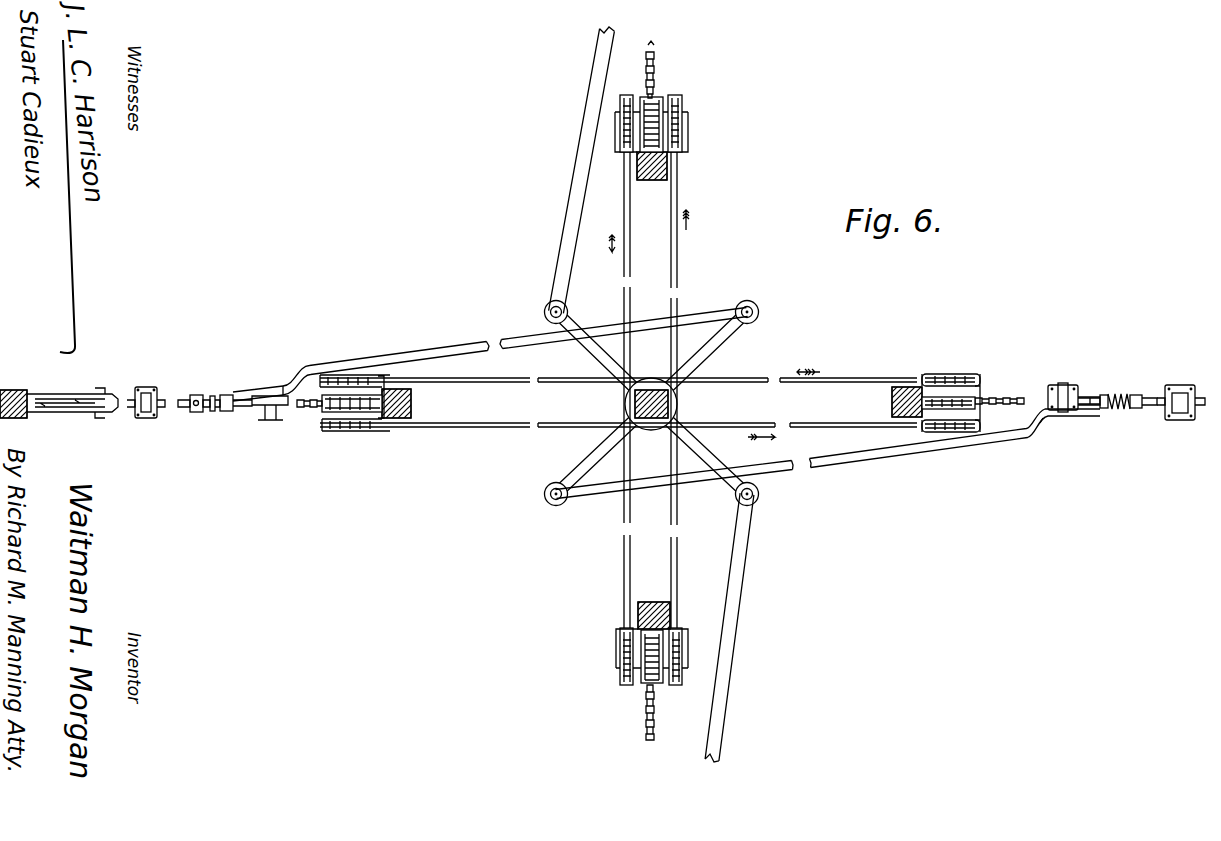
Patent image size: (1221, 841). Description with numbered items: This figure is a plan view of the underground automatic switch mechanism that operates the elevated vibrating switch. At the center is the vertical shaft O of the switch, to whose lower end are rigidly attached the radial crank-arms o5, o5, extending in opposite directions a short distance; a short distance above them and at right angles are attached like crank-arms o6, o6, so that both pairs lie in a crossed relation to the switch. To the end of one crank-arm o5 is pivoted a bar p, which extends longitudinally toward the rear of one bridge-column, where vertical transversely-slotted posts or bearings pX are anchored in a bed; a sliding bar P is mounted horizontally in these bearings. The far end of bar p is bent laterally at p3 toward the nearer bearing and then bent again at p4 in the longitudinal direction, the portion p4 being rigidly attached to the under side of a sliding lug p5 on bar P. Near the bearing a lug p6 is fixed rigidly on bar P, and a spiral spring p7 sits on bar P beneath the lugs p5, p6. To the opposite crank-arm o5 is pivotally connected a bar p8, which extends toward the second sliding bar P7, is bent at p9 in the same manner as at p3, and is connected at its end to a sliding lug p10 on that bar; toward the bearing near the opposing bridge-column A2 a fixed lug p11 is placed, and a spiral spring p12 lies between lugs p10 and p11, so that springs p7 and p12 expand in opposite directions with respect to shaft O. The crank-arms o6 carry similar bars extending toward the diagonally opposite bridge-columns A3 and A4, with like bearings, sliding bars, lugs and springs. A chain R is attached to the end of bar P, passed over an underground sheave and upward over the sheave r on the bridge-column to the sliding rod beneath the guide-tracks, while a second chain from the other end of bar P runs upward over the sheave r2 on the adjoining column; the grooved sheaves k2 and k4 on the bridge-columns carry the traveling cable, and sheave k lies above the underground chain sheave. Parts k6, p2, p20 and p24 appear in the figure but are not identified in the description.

The shaft O is at (669, 405).
The radial crank-arms o5 is at (725, 359).
The crank-arms o6 is at (737, 455).
The sheave k is at (684, 545).
The grooved sheaves k2 is at (678, 268).
The grooved sheaves k4 is at (686, 140).
The tube k6 is at (621, 147).
The bridge-column A2 is at (396, 420).
The bridge-column A3 is at (653, 602).
The bridge-column A4 is at (648, 182).
The sheave r is at (320, 412).
The sheave r2 is at (653, 100).
The chain R is at (634, 735).
The bar p is at (836, 467).
The bracket p2 is at (1056, 385).
The lateral bend p3 is at (1040, 430).
The longitudinal portion p4 is at (1104, 410).
The sliding lug p5 is at (1138, 395).
The fixed lug p6 is at (1102, 395).
The spiral spring p7 is at (1120, 393).
The bar p8 is at (459, 347).
The bend p9 is at (285, 381).
The sliding lug p10 is at (205, 399).
The fixed lug p11 is at (240, 410).
The spiral spring p12 is at (213, 412).
The sliding bar P7 is at (190, 411).
The sliding bar P is at (1150, 406).
The bearing pX is at (147, 418).
The arm p20 is at (734, 644).
The arm p24 is at (571, 190).